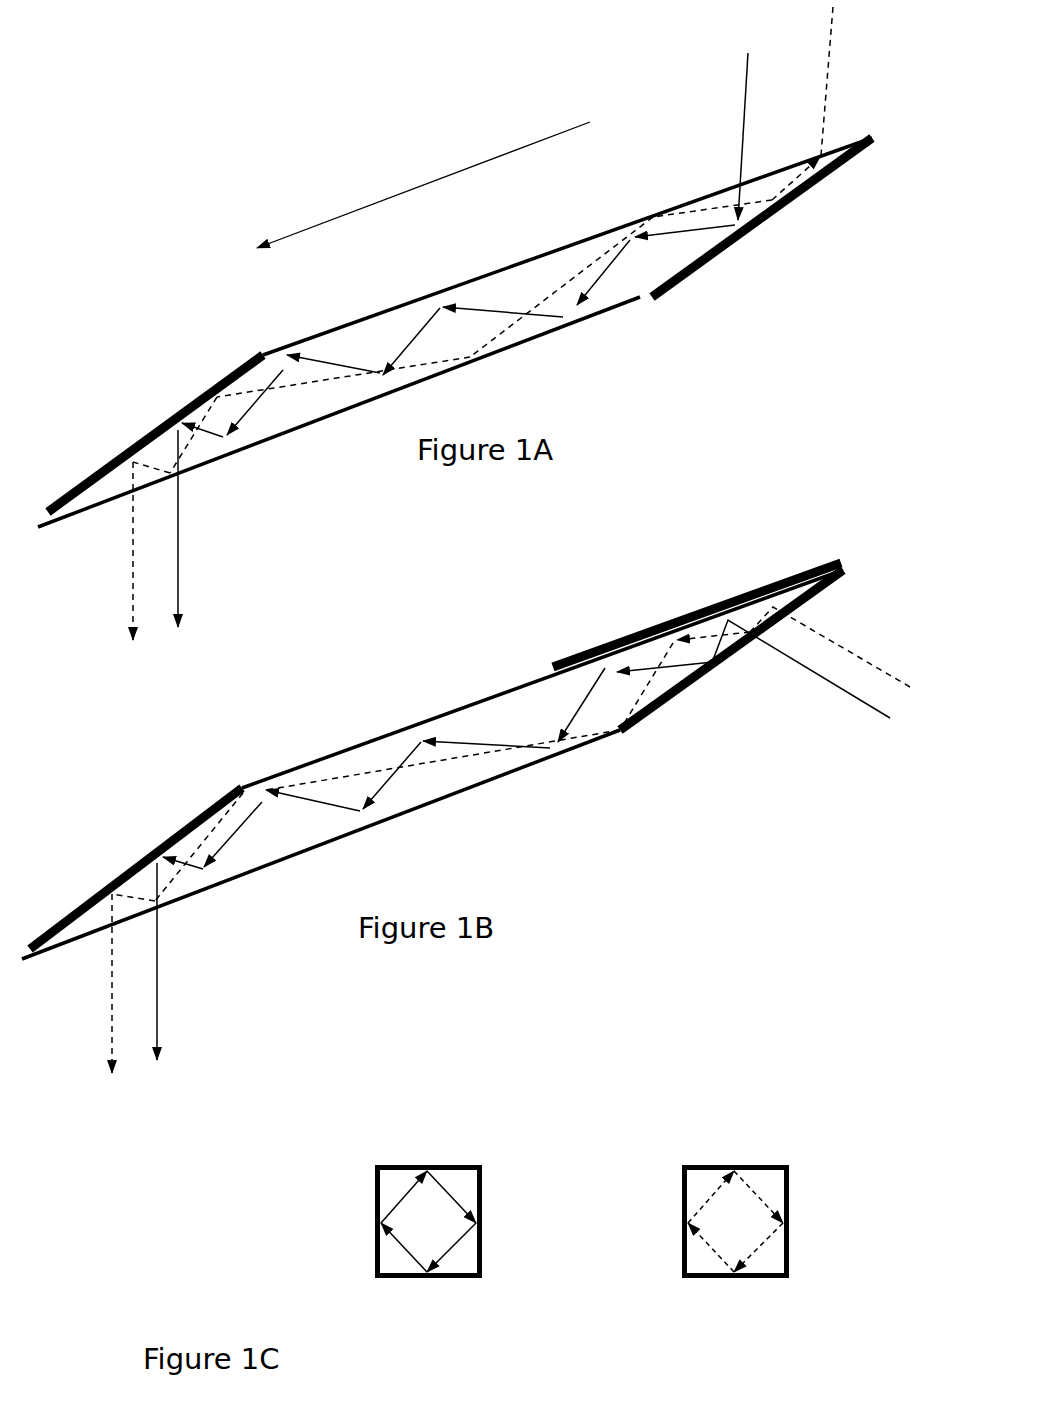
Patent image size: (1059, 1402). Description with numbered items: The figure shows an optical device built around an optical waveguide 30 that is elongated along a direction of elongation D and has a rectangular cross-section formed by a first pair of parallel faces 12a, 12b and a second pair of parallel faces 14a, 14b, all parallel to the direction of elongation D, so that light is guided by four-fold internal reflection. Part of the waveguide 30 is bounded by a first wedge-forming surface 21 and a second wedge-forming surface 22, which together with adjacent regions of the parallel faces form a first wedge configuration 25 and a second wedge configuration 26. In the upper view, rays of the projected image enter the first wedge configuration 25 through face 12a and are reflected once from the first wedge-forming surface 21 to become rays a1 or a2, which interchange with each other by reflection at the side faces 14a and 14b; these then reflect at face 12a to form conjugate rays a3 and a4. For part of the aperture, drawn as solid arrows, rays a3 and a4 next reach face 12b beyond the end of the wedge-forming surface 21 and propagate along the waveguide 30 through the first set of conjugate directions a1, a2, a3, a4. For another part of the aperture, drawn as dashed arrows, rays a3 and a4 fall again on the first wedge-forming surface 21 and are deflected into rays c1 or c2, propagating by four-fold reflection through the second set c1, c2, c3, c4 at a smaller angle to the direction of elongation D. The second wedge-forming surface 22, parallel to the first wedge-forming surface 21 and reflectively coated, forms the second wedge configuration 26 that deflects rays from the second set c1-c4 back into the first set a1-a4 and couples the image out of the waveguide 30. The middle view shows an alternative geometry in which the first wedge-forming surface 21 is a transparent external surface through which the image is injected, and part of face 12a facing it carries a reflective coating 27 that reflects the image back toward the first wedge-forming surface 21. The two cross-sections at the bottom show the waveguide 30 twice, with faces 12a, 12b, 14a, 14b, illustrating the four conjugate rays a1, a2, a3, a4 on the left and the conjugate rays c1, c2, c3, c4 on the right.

In FIG. 1A, the first parallel face 12a is at (480, 278).
In FIG. 1B, the first parallel face 12a is at (381, 739).
In FIG. 1C, the first parallel face 12a is at (427, 1167).
In FIG. 1A, the second parallel face 12b is at (567, 330).
In FIG. 1B, the second parallel face 12b is at (475, 790).
In FIG. 1C, the second parallel face 12b is at (420, 1280).
In FIG. 1C, the first side face 14a is at (372, 1205).
In FIG. 1C, the second side face 14b is at (483, 1227).
In FIG. 1A, the first wedge-forming surface 21 is at (783, 215).
In FIG. 1B, the first wedge-forming surface 21 is at (707, 677).
In FIG. 1A, the second wedge-forming surface 22 is at (140, 423).
In FIG. 1B, the second wedge-forming surface 22 is at (119, 852).
In FIG. 1A, the first wedge configuration 25 is at (698, 245).
In FIG. 1B, the first wedge configuration 25 is at (662, 682).
In FIG. 1A, the second wedge configuration 26 is at (108, 493).
In FIG. 1B, the second wedge configuration 26 is at (92, 920).
In FIG. 1B, the reflective coating 27 is at (772, 585).
In FIG. 1A, the optical waveguide 30 is at (520, 287).
In FIG. 1B, the optical waveguide 30 is at (520, 722).
In FIG. 1C, the optical waveguide 30 is at (343, 1162).
In FIG. 1A, the direction of elongation D is at (412, 189).
In FIG. 1A, the first conjugate propagation direction a1 is at (660, 230).
In FIG. 1B, the first conjugate propagation direction a1 is at (558, 668).
In FIG. 1C, the first conjugate propagation direction a1 is at (403, 1250).
In FIG. 1A, the second conjugate propagation direction a2 is at (685, 231).
In FIG. 1B, the second conjugate propagation direction a2 is at (665, 667).
In FIG. 1C, the second conjugate propagation direction a2 is at (404, 1197).
In FIG. 1A, the third conjugate propagation direction a3 is at (607, 263).
In FIG. 1B, the third conjugate propagation direction a3 is at (652, 658).
In FIG. 1C, the third conjugate propagation direction a3 is at (451, 1197).
In FIG. 1A, the fourth conjugate propagation direction a4 is at (372, 372).
In FIG. 1B, the fourth conjugate propagation direction a4 is at (356, 805).
In FIG. 1C, the fourth conjugate propagation direction a4 is at (453, 1247).
In FIG. 1A, the first direction of second conjugate set c1 is at (723, 200).
In FIG. 1B, the first direction of second conjugate set c1 is at (443, 807).
In FIG. 1C, the first direction of second conjugate set c1 is at (711, 1250).
In FIG. 1A, the second direction of second conjugate set c2 is at (561, 287).
In FIG. 1B, the second direction of second conjugate set c2 is at (685, 681).
In FIG. 1C, the second direction of second conjugate set c2 is at (711, 1197).
In FIG. 1A, the third direction of second conjugate set c3 is at (505, 335).
In FIG. 1B, the third direction of second conjugate set c3 is at (443, 760).
In FIG. 1C, the third direction of second conjugate set c3 is at (758, 1197).
In FIG. 1A, the fourth direction of second conjugate set c4 is at (175, 435).
In FIG. 1B, the fourth direction of second conjugate set c4 is at (177, 847).
In FIG. 1C, the fourth direction of second conjugate set c4 is at (760, 1247).